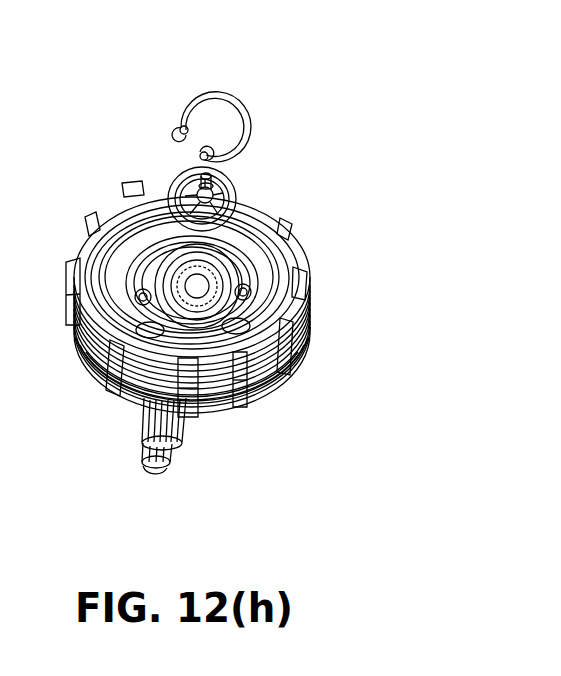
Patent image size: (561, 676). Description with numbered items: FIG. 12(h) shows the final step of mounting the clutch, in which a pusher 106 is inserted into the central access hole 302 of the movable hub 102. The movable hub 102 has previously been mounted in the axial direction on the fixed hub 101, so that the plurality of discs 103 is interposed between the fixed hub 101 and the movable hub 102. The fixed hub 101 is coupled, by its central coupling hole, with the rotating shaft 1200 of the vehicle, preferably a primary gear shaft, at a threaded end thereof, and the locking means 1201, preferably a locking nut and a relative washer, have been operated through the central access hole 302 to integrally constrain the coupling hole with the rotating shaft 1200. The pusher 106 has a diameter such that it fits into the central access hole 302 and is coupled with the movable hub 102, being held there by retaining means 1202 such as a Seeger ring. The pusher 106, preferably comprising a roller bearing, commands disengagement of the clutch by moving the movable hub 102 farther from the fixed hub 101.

The fixed hub 101 is at (242, 416).
The movable hub 102 is at (287, 260).
The discs 103 is at (322, 318).
The pusher 106 is at (236, 203).
The central access hole 302 is at (172, 245).
The rotating shaft 1200 is at (200, 444).
The locking means 1201 is at (176, 285).
The retaining means 1202 is at (223, 103).